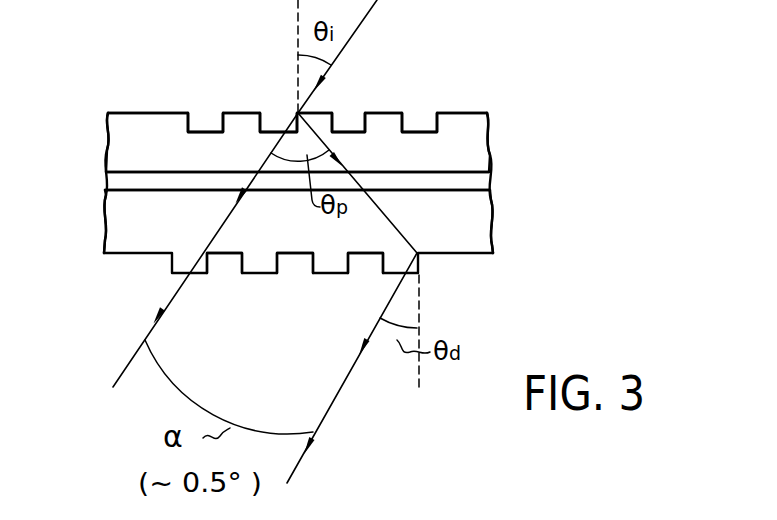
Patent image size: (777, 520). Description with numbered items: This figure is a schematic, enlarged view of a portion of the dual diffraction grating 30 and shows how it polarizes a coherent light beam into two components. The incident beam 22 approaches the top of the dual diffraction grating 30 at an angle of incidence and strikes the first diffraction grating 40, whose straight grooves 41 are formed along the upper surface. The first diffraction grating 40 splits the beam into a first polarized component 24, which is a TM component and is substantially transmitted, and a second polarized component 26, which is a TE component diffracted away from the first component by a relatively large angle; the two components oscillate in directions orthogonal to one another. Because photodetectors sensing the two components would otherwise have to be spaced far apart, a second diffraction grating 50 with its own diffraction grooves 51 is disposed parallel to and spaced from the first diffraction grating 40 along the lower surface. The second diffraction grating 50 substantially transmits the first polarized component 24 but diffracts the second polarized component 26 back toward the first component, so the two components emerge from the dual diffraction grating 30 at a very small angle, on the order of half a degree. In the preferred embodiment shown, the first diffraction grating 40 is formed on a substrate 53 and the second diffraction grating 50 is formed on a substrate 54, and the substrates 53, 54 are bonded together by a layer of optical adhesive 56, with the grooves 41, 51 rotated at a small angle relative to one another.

The incident beam 22 is at (366, 18).
The first polarized component 24 is at (228, 220).
The second polarized component 26 is at (383, 210).
The dual diffraction grating 30 is at (142, 97).
The first diffraction grating 40 is at (467, 112).
The grooves of the first diffraction grating 41 is at (207, 128).
The second diffraction grating 50 is at (480, 257).
The diffraction grooves 51 is at (226, 262).
The substrate 53 is at (487, 132).
The substrate 54 is at (496, 232).
The layer of optical adhesive 56 is at (490, 178).